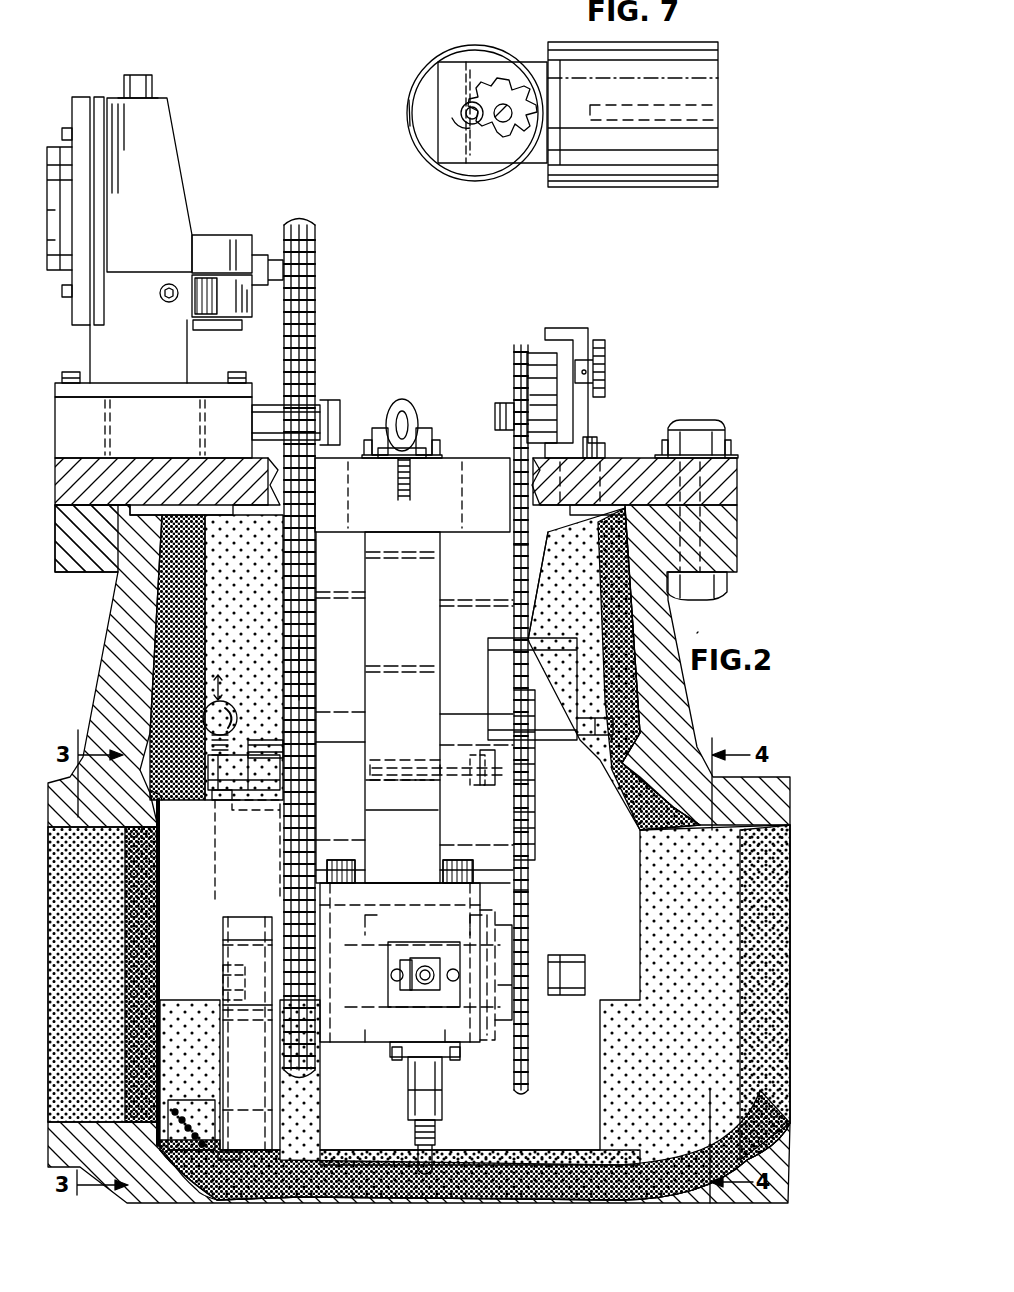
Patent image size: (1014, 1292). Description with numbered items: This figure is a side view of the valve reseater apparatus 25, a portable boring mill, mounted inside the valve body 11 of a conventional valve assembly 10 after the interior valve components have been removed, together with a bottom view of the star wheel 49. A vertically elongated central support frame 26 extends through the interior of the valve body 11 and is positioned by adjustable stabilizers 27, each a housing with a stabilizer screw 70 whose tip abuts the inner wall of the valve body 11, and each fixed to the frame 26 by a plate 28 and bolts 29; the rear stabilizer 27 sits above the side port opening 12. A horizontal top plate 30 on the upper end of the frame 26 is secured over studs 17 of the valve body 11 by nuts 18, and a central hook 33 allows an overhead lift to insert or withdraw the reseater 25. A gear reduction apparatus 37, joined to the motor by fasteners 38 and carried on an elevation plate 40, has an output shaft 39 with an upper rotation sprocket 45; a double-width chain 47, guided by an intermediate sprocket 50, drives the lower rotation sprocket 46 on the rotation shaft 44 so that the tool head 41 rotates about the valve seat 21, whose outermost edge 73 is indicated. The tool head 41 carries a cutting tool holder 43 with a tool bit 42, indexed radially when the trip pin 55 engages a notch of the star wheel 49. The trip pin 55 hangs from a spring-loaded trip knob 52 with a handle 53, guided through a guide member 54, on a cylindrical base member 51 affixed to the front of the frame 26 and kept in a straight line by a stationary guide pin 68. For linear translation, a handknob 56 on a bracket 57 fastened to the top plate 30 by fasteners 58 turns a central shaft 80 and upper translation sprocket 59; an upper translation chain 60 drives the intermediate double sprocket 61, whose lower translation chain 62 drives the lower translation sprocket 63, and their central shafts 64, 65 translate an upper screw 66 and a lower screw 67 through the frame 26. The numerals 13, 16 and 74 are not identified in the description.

In FIG. 2, the valve assembly 10 is at (711, 631).
In FIG. 2, the valve body 11 is at (106, 639).
In FIG. 2, the side port opening 12 is at (78, 986).
In FIG. 2, the housing interior chamber 13 is at (230, 621).
In FIG. 2, the top plate 16 is at (95, 548).
In FIG. 2, the stud 17 is at (416, 410).
In FIG. 2, the nut 18 is at (428, 440).
In FIG. 2, the valve seat 21 is at (170, 905).
In FIG. 2, the valve reseater apparatus 25 is at (257, 175).
In FIG. 2, the central support frame 26 is at (391, 655).
In FIG. 2, the stabilizer 27 is at (590, 738).
In FIG. 2, the plate 28 is at (422, 945).
In FIG. 2, the bolt 29 is at (392, 974).
In FIG. 2, the top plate 30 is at (612, 470).
In FIG. 2, the hook 33 is at (400, 400).
In FIG. 2, the gear reduction apparatus 37 is at (167, 120).
In FIG. 2, the fastener 38 is at (68, 130).
In FIG. 2, the output shaft 39 is at (252, 258).
In FIG. 2, the elevation plate 40 is at (140, 441).
In FIG. 2, the tool head 41 is at (278, 1102).
In FIG. 2, the tool bit 42 is at (165, 1148).
In FIG. 2, the cutting tool holder 43 is at (204, 1097).
In FIG. 2, the rotation shaft 44 is at (197, 970).
In FIG. 2, the upper rotation sprocket 45 is at (308, 225).
In FIG. 2, the lower rotation sprocket 46 is at (290, 1072).
In FIG. 2, the double-width chain 47 is at (310, 672).
In FIG. 2, the star wheel 49 is at (232, 1158).
In FIG. 7, the star wheel 49 is at (512, 150).
In FIG. 2, the guide sprocket 50 is at (312, 400).
In FIG. 2, the cylindrical base member 51 is at (265, 790).
In FIG. 7, the cylindrical base member 51 is at (576, 35).
In FIG. 2, the trip knob 52 is at (228, 704).
In FIG. 7, the trip knob 52 is at (428, 78).
In FIG. 2, the handle 53 is at (232, 718).
In FIG. 7, the handle 53 is at (400, 110).
In FIG. 2, the guide member 54 is at (210, 770).
In FIG. 7, the guide member 54 is at (440, 145).
In FIG. 2, the trip pin 55 is at (220, 795).
In FIG. 7, the trip pin 55 is at (460, 102).
In FIG. 2, the handknob 56 is at (605, 358).
In FIG. 2, the bracket 57 is at (578, 328).
In FIG. 2, the fastener 58 is at (595, 440).
In FIG. 2, the upper translation sprocket 59 is at (521, 340).
In FIG. 2, the upper translation chain 60 is at (512, 560).
In FIG. 2, the intermediate translation sprocket 61 is at (530, 800).
In FIG. 2, the lower translation chain 62 is at (535, 900).
In FIG. 2, the lower translation sprocket 63 is at (528, 1082).
In FIG. 2, the central shaft 64 is at (480, 765).
In FIG. 2, the central shaft 65 is at (512, 1030).
In FIG. 2, the upper screw 66 is at (425, 770).
In FIG. 2, the lower screw 67 is at (488, 920).
In FIG. 2, the guide pin 68 is at (262, 745).
In FIG. 7, the guide pin 68 is at (648, 110).
In FIG. 2, the stabilizer screw 70 is at (425, 985).
In FIG. 2, the outermost edge 73 is at (155, 797).
In FIG. 2, the bolt 74 is at (68, 372).
In FIG. 2, the central shaft 80 is at (532, 353).